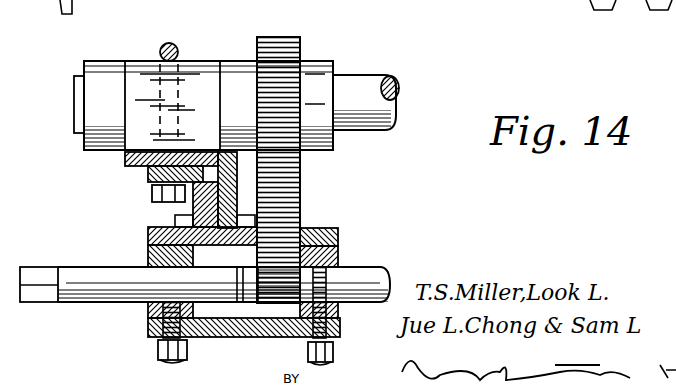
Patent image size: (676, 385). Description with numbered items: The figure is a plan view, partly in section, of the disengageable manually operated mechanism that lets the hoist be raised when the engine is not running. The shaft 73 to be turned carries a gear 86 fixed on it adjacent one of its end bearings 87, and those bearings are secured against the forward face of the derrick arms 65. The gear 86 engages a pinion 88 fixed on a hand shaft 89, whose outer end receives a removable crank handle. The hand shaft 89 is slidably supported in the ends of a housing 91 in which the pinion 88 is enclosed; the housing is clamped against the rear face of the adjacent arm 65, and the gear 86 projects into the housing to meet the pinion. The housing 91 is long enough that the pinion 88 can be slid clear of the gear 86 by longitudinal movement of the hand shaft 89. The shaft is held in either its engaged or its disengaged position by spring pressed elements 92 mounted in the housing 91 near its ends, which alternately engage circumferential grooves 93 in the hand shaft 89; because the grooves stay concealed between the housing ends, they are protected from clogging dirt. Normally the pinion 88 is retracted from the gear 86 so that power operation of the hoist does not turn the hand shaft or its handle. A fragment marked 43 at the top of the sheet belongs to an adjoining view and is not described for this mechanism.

The roller element of adjacent figure 43 is at (560, 0).
The derrick arms 65 is at (148, 187).
The shaft 73 is at (365, 93).
The gear 86 is at (277, 65).
The end bearings 87 is at (192, 77).
The pinion 88 is at (280, 283).
The hand shaft 89 is at (378, 282).
The housing 91 is at (269, 338).
The spring pressed elements 92 is at (152, 322).
The circumferential grooves 93 is at (225, 322).